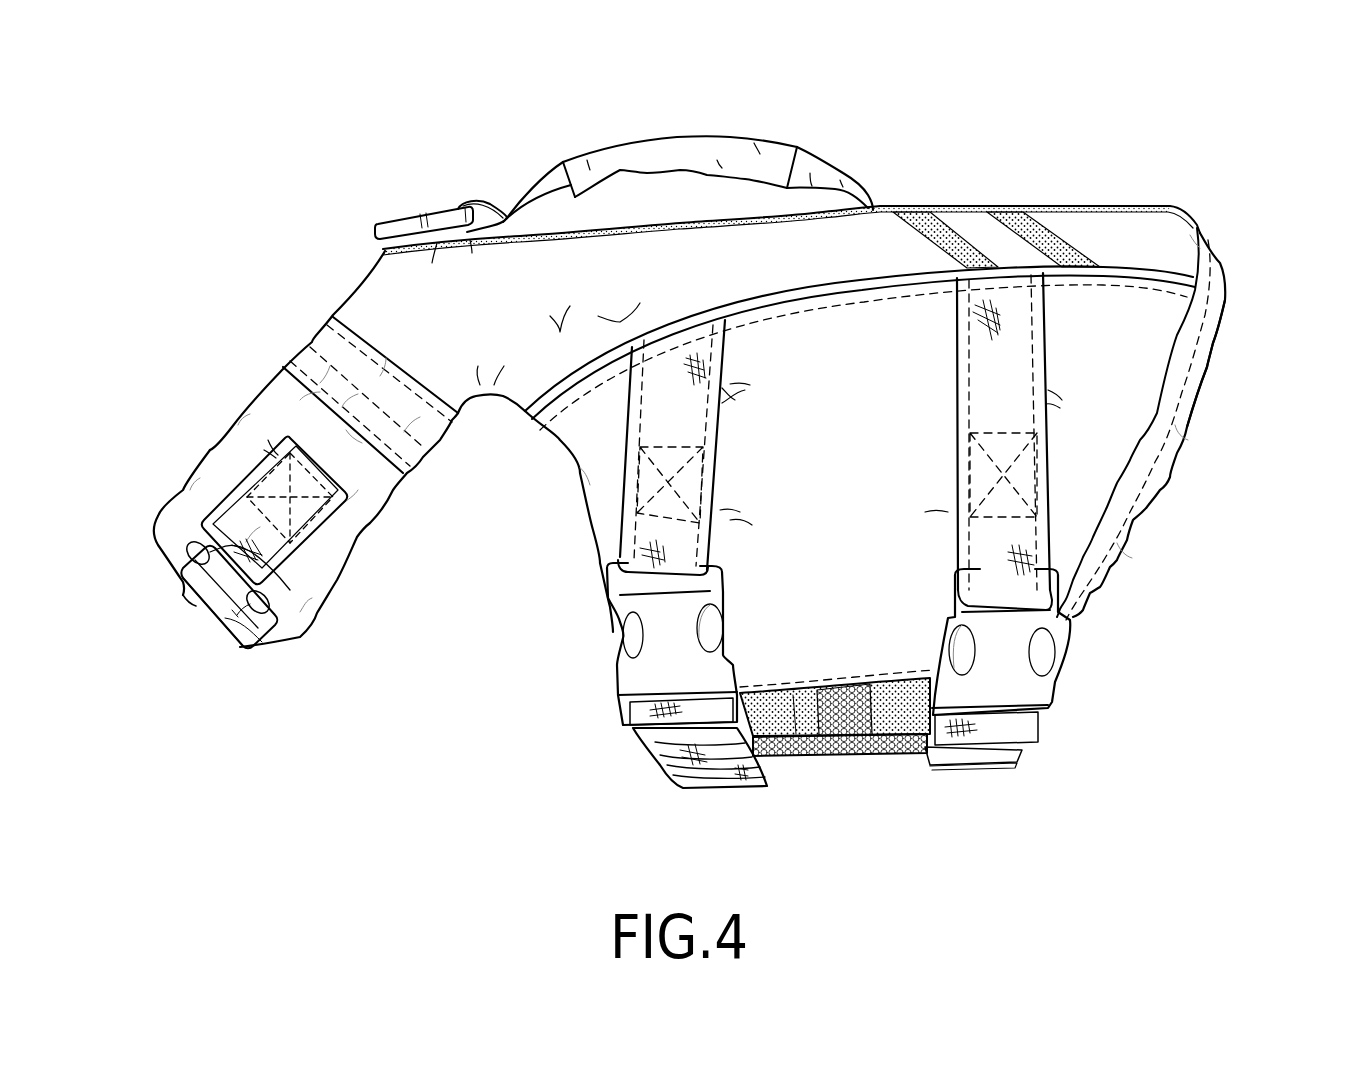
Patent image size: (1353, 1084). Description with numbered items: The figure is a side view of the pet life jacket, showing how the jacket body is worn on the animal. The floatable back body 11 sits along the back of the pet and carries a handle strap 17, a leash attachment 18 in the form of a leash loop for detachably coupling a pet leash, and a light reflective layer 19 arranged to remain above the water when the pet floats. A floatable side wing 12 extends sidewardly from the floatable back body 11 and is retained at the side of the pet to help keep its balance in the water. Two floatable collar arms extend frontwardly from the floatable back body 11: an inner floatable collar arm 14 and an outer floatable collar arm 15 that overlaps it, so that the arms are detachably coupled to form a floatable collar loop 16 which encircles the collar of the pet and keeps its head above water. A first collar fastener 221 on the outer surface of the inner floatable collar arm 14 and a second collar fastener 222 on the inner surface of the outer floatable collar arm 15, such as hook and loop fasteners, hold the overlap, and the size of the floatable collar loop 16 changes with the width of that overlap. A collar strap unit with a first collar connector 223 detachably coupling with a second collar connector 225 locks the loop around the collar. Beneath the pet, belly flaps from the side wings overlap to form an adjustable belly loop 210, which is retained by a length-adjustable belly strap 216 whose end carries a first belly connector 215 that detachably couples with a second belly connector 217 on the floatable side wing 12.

The floatable back body 11 is at (843, 240).
The floatable side wing 12 is at (1113, 333).
The inner floatable collar arm 14 is at (237, 470).
The outer floatable collar arm 15 is at (151, 496).
The floatable collar loop 16 is at (281, 352).
The handle strap 17 is at (707, 150).
The leash attachment 18 is at (405, 223).
The light reflective layer 19 is at (1038, 235).
The adjustable belly loop 210 is at (1197, 467).
The first belly connector 215 is at (630, 711).
The length-adjustable belly strap 216 is at (673, 773).
The second belly connector 217 is at (647, 670).
The first collar fastener 221 is at (792, 720).
The second collar fastener 222 is at (868, 755).
The first collar connector 223 is at (216, 592).
The second collar connector 225 is at (239, 697).